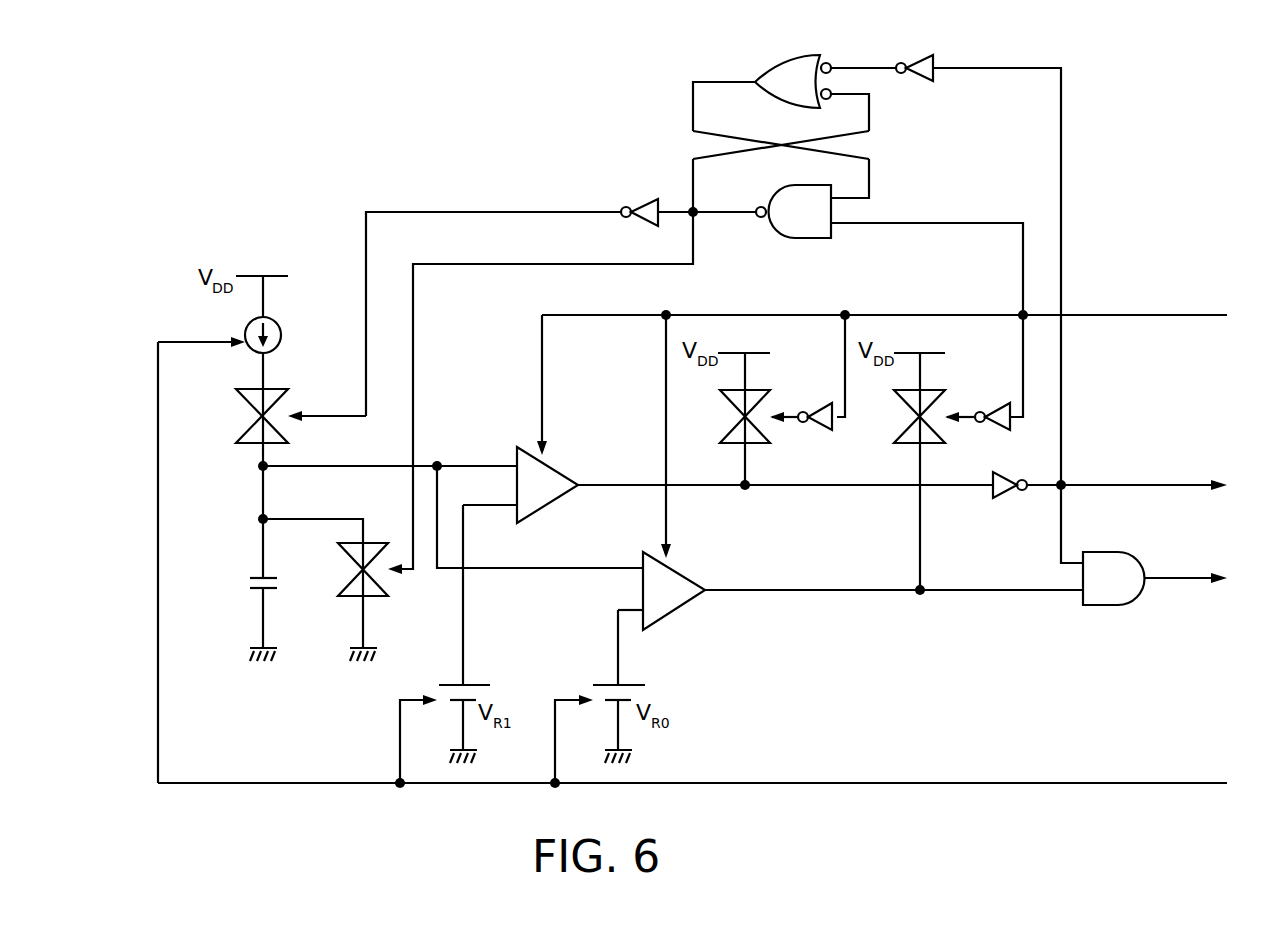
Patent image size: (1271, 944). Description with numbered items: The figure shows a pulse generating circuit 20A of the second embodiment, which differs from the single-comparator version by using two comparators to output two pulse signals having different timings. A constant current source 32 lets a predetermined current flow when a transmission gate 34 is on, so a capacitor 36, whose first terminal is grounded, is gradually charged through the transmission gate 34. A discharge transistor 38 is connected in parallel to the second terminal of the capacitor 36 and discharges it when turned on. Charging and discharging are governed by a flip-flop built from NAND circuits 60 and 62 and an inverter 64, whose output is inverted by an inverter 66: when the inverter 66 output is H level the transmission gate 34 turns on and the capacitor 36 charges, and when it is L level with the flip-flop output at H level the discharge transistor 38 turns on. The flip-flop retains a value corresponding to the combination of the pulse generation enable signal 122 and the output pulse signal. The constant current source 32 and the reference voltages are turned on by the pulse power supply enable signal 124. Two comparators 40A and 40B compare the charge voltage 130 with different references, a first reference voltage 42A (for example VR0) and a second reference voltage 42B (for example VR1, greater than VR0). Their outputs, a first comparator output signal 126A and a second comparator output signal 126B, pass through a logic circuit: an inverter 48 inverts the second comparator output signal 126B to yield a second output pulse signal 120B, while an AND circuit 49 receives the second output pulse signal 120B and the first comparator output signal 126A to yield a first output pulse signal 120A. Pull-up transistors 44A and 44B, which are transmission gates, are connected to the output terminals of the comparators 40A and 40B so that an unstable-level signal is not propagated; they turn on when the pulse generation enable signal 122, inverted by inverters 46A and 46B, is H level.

The pulse generating circuit 20A is at (258, 88).
The constant current source 32 is at (245, 331).
The transmission gate 34 is at (239, 401).
The capacitor 36 is at (251, 578).
The discharge transistor 38 is at (342, 555).
The comparator 40A is at (683, 607).
The comparator 40B is at (557, 500).
The first reference voltage 42A is at (647, 685).
The second reference voltage 42B is at (492, 685).
The pull-up transistor 44A is at (945, 442).
The pull-up transistor 44B is at (772, 442).
The inverter 46A is at (987, 408).
The inverter 46B is at (808, 408).
The inverter 48 is at (1012, 490).
The AND circuit 49 is at (1113, 607).
The NAND circuit 60 is at (757, 70).
The NAND circuit 62 is at (772, 233).
The inverter 64 is at (918, 83).
The inverter 66 is at (643, 197).
The first output pulse signal 120A is at (1165, 580).
The second output pulse signal 120B is at (1153, 482).
The pulse generation enable signal 122 is at (1167, 317).
The pulse power supply enable signal 124 is at (1108, 780).
The first comparator output signal 126A is at (835, 592).
The second comparator output signal 126B is at (835, 487).
The charge voltage 130 is at (453, 463).